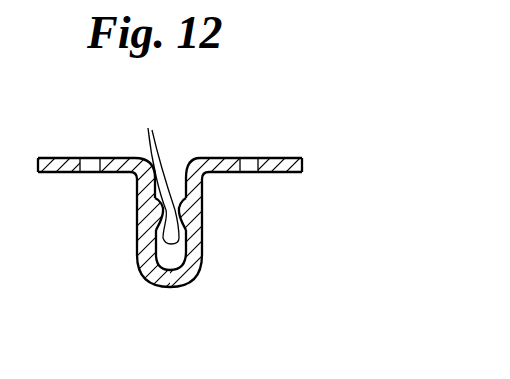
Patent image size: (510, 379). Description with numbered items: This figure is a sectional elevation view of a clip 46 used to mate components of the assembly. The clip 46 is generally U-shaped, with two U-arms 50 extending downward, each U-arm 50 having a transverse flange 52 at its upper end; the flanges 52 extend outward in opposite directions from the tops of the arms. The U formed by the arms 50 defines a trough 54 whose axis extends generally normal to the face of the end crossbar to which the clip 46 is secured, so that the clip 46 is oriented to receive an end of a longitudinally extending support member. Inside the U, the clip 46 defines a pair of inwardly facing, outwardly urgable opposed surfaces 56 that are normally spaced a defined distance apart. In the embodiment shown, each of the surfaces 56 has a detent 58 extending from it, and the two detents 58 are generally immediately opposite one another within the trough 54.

The clip 46 is at (217, 197).
The U-arms 50 is at (151, 241).
The transverse flange 52 is at (56, 157).
The trough 54 is at (179, 163).
The opposed surfaces 56 is at (144, 164).
The detent 58 is at (160, 211).